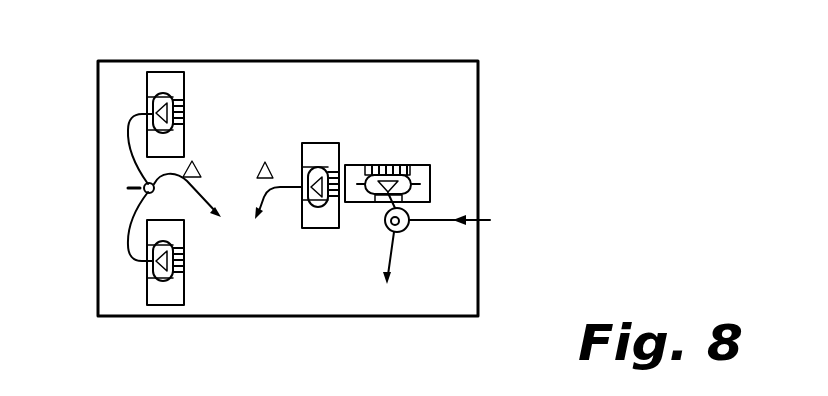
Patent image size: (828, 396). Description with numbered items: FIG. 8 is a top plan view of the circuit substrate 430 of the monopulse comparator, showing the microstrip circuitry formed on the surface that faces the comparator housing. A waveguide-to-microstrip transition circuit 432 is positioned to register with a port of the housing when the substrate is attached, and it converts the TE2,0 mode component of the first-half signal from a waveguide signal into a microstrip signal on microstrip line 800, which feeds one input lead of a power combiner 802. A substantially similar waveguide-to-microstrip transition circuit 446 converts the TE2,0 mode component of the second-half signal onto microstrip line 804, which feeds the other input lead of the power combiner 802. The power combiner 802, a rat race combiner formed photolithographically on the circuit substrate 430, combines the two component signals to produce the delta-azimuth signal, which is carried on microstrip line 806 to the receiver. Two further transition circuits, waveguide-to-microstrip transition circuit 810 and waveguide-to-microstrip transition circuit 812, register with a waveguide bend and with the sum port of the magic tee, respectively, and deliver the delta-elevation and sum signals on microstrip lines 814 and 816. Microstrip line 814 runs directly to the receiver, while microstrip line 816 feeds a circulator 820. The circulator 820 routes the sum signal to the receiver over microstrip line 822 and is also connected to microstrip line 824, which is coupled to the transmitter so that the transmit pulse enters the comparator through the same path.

The circuit substrate 430 is at (465, 102).
The waveguide-to-microstrip transition circuit 432 is at (167, 78).
The waveguide-to-microstrip transition circuit 446 is at (147, 290).
The microstrip line 800 is at (128, 133).
The power combiner 802 is at (143, 184).
The microstrip line 804 is at (130, 230).
The microstrip line 806 is at (201, 210).
The waveguide-to-microstrip transition circuit 810 is at (322, 150).
The waveguide-to-microstrip transition circuit 812 is at (412, 165).
The microstrip line 814 is at (268, 205).
The microstrip line 816 is at (388, 207).
The circulator 820 is at (408, 228).
The microstrip line 822 is at (388, 263).
The microstrip line 824 is at (447, 217).